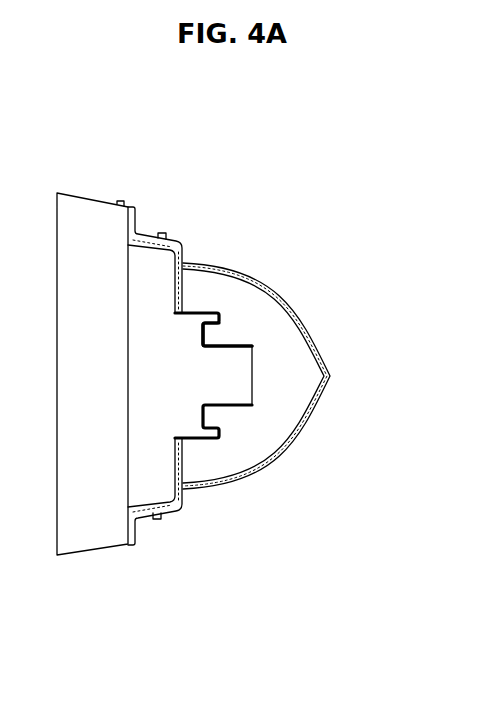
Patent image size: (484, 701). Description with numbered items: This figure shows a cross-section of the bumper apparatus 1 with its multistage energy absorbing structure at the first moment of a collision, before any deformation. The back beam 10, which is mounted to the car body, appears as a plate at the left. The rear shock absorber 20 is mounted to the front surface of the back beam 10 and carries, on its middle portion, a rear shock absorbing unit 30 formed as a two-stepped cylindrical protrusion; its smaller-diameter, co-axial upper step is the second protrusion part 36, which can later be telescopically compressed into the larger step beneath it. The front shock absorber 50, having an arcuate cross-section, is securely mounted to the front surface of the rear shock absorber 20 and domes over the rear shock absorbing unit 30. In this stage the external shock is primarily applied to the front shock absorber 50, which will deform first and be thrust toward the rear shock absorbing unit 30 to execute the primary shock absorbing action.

The bumper apparatus 1 is at (254, 225).
The back beam 10 is at (92, 532).
The rear shock absorber 20 is at (150, 233).
The rear shock absorbing unit 30 is at (240, 407).
The second protrusion part 36 is at (240, 345).
The front shock absorber 50 is at (308, 316).